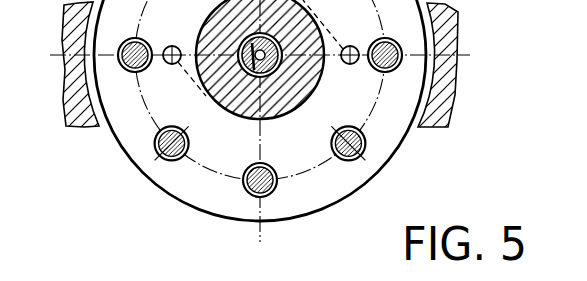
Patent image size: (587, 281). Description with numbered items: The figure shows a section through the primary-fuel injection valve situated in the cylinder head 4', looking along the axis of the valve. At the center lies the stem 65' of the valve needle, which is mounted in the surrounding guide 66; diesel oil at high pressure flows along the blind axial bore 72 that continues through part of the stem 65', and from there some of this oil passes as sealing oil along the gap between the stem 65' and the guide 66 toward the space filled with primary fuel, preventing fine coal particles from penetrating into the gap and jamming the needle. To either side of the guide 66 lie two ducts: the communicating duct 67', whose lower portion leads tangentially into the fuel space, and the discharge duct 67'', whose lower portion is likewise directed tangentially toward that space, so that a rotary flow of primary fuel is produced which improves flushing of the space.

The cylinder head 4' is at (285, 64).
The guide 66 is at (233, 102).
The stem 65' is at (279, 98).
The blind axial bore 72 is at (256, 53).
The discharge duct 67'' is at (181, 81).
The communicating duct 67' is at (337, 57).